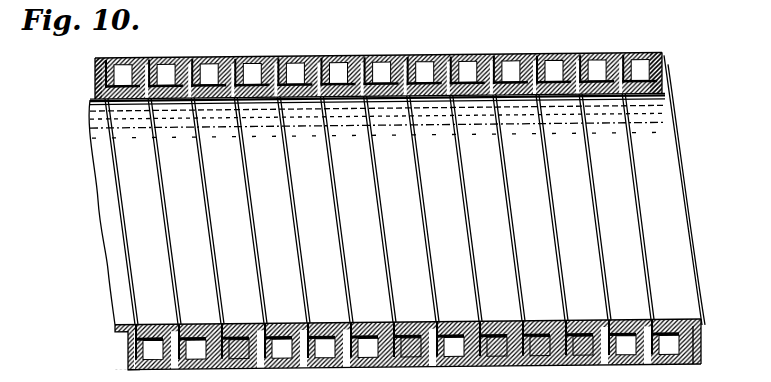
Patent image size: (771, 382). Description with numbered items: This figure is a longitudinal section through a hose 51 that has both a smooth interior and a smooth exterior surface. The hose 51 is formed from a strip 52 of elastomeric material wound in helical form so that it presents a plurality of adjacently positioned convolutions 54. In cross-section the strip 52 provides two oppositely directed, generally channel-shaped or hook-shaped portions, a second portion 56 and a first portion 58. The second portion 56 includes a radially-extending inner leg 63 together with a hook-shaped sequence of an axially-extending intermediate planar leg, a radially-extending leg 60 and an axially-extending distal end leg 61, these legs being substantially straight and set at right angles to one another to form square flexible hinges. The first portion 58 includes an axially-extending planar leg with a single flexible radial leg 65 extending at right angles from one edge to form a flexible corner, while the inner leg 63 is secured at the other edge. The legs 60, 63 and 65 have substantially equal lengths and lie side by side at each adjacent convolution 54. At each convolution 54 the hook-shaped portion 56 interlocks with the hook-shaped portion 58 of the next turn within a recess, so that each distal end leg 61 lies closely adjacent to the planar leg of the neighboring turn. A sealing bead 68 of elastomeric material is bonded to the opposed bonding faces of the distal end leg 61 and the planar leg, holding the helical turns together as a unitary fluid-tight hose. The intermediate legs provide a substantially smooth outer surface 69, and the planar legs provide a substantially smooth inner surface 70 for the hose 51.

The hose 51 is at (573, 45).
The strip 52 is at (130, 348).
The convolutions 54 is at (185, 290).
The second portion 56 is at (431, 55).
The first portion 58 is at (407, 321).
The radially-extending leg 60 is at (613, 72).
The distal end leg 61 is at (343, 72).
The inner leg 63 is at (367, 76).
The flexible radial leg 65 is at (500, 71).
The sealing bead 68 is at (212, 84).
The outer surface 69 is at (652, 58).
The inner surface 70 is at (666, 325).